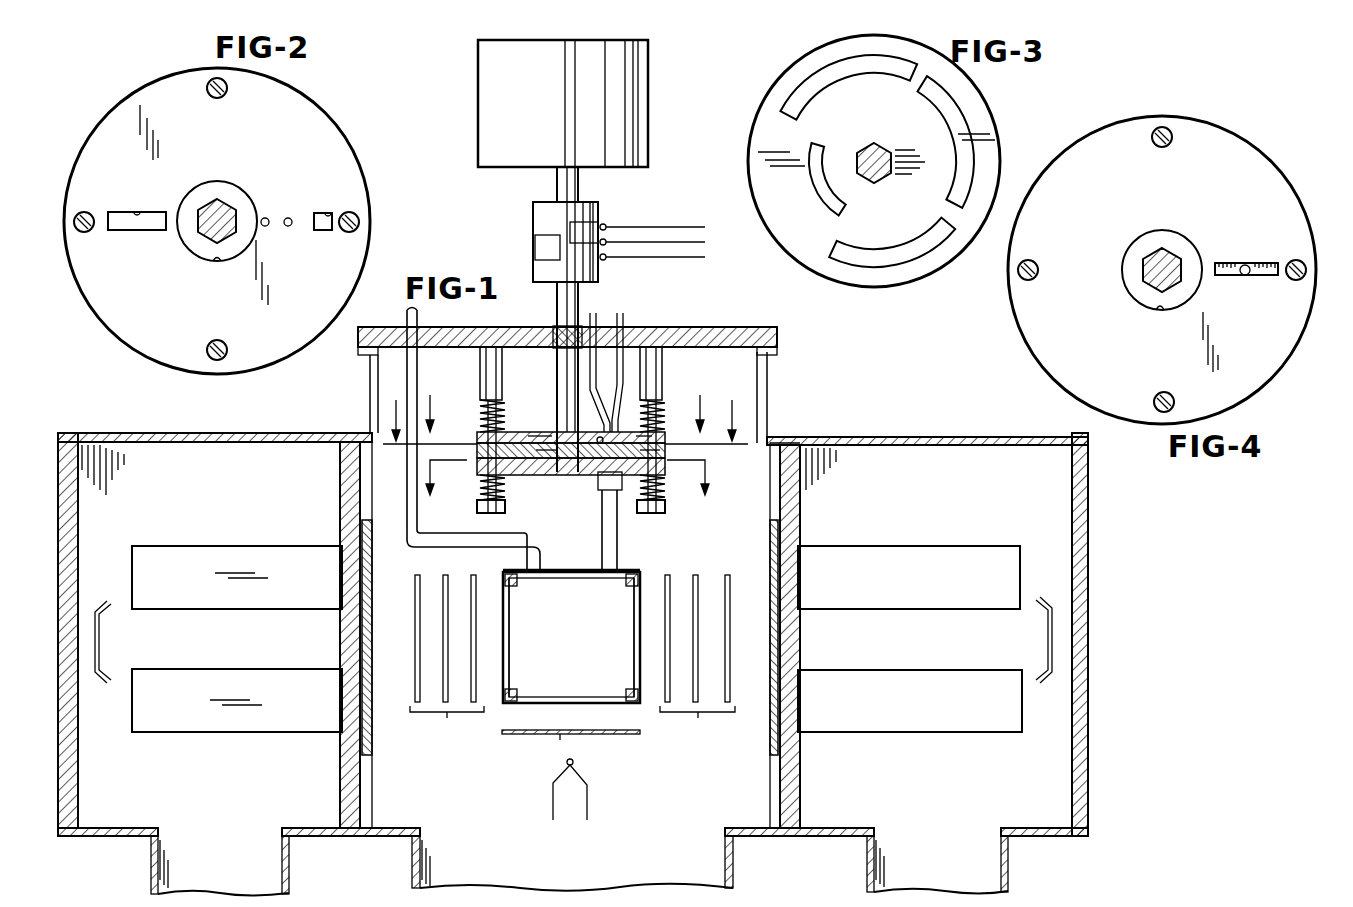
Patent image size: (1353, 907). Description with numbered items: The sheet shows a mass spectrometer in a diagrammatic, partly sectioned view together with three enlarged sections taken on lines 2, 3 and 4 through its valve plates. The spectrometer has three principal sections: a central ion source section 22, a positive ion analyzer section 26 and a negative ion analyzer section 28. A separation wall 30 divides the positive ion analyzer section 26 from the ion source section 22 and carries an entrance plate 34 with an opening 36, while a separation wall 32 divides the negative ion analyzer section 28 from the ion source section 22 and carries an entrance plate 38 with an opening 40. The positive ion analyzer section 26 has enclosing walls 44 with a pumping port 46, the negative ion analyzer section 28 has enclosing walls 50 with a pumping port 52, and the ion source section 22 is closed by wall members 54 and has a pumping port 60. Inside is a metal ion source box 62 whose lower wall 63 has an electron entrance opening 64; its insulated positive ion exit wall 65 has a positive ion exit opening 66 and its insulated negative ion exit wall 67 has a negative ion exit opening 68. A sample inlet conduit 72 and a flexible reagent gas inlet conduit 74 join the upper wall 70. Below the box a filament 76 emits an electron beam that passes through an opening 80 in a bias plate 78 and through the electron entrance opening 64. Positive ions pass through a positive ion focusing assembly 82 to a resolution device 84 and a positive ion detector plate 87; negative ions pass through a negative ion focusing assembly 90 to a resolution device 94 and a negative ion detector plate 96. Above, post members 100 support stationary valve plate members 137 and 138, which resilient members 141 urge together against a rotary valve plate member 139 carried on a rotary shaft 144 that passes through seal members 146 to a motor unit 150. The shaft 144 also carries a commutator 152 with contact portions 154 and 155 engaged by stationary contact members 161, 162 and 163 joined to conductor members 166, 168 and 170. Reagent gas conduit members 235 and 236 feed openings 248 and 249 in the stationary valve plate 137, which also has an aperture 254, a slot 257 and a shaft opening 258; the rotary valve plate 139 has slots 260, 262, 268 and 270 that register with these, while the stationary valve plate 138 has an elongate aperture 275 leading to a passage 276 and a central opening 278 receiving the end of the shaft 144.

In FIG. 1, the ion source section 22 is at (748, 382).
In FIG. 1, the positive ion analyzer section 26 is at (907, 458).
In FIG. 1, the negative ion analyzer section 28 is at (211, 456).
In FIG. 1, the separation wall 30 is at (800, 480).
In FIG. 1, the separation wall 32 is at (340, 472).
In FIG. 1, the entrance plate 34 is at (778, 520).
In FIG. 1, the opening 36 is at (770, 638).
In FIG. 1, the entrance plate 38 is at (366, 520).
In FIG. 1, the opening 40 is at (374, 638).
In FIG. 1, the enclosing walls 44 is at (1075, 466).
In FIG. 1, the pumping port 46 is at (937, 865).
In FIG. 1, the enclosing walls 50 is at (112, 433).
In FIG. 1, the pumping port 52 is at (220, 866).
In FIG. 1, the wall members 54 is at (733, 328).
In FIG. 1, the pumping port 60 is at (572, 863).
In FIG. 1, the ion source box 62 is at (571, 637).
In FIG. 1, the lower wall 63 is at (602, 699).
In FIG. 1, the electron entrance opening 64 is at (570, 699).
In FIG. 1, the positive ion exit wall 65 is at (636, 578).
In FIG. 1, the positive ion exit opening 66 is at (631, 630).
In FIG. 1, the negative ion exit wall 67 is at (512, 664).
In FIG. 1, the negative ion exit opening 68 is at (512, 630).
In FIG. 1, the upper wall 70 is at (572, 570).
In FIG. 1, the sample inlet conduit 72 is at (407, 310).
In FIG. 1, the reagent gas inlet conduit 74 is at (602, 522).
In FIG. 1, the filament 76 is at (592, 785).
In FIG. 1, the bias plate 78 is at (622, 736).
In FIG. 1, the opening 80 is at (570, 730).
In FIG. 1, the positive ion focusing assembly 82 is at (698, 718).
In FIG. 1, the resolution device 84 is at (906, 670).
In FIG. 1, the positive ion detector plate 87 is at (1044, 640).
In FIG. 1, the negative ion focusing assembly 90 is at (447, 718).
In FIG. 1, the resolution device 94 is at (232, 669).
In FIG. 1, the negative ion detector plate 96 is at (100, 640).
In FIG. 1, the post members 100 is at (480, 364).
In FIG. 2, the post members 100 is at (216, 78).
In FIG. 4, the post members 100 is at (1165, 148).
In FIG. 1, the stationary valve plate member 137 is at (480, 438).
In FIG. 2, the stationary valve plate member 137 is at (110, 118).
In FIG. 1, the stationary valve plate member 138 is at (565, 475).
In FIG. 4, the stationary valve plate member 138 is at (1080, 142).
In FIG. 1, the rotary valve plate member 139 is at (536, 443).
In FIG. 3, the rotary valve plate member 139 is at (750, 135).
In FIG. 1, the resilient members 141 is at (480, 410).
In FIG. 1, the rotary shaft 144 is at (557, 184).
In FIG. 2, the rotary shaft 144 is at (217, 200).
In FIG. 3, the rotary shaft 144 is at (869, 150).
In FIG. 4, the rotary shaft 144 is at (1168, 246).
In FIG. 1, the seal members 146 is at (553, 330).
In FIG. 1, the motor unit 150 is at (563, 103).
In FIG. 1, the commutator 152 is at (533, 214).
In FIG. 1, the contact portion 154 is at (570, 232).
In FIG. 1, the contact portion 155 is at (535, 247).
In FIG. 1, the stationary contact member 161 is at (604, 224).
In FIG. 1, the stationary contact member 162 is at (606, 240).
In FIG. 1, the stationary contact member 163 is at (606, 258).
In FIG. 1, the conductor member 166 is at (700, 226).
In FIG. 1, the conductor member 168 is at (708, 241).
In FIG. 1, the conductor member 170 is at (708, 257).
In FIG. 1, the reagent gas conduit member 235 is at (593, 313).
In FIG. 1, the reagent gas conduit member 236 is at (621, 313).
In FIG. 2, the opening 248 is at (267, 217).
In FIG. 1, the opening 249 is at (600, 430).
In FIG. 2, the opening 249 is at (288, 227).
In FIG. 1, the aperture 254 is at (645, 420).
In FIG. 2, the aperture 254 is at (324, 213).
In FIG. 1, the slot 257 is at (540, 432).
In FIG. 2, the slot 257 is at (137, 212).
In FIG. 2, the opening 258 is at (215, 257).
In FIG. 1, the slot 260 is at (548, 475).
In FIG. 3, the slot 260 is at (812, 145).
In FIG. 1, the slot 262 is at (662, 460).
In FIG. 3, the slot 262 is at (945, 190).
In FIG. 3, the slot 268 is at (882, 72).
In FIG. 3, the slot 270 is at (905, 250).
In FIG. 1, the elongate aperture 275 is at (570, 475).
In FIG. 4, the elongate aperture 275 is at (1232, 277).
In FIG. 1, the passage 276 is at (651, 513).
In FIG. 4, the passage 276 is at (1245, 262).
In FIG. 4, the opening 278 is at (1156, 307).
In FIG. 1, the section line 2— 2 is at (565, 399).
In FIG. 1, the section line 3— 3 is at (565, 409).
In FIG. 1, the section line 4— 4 is at (568, 492).